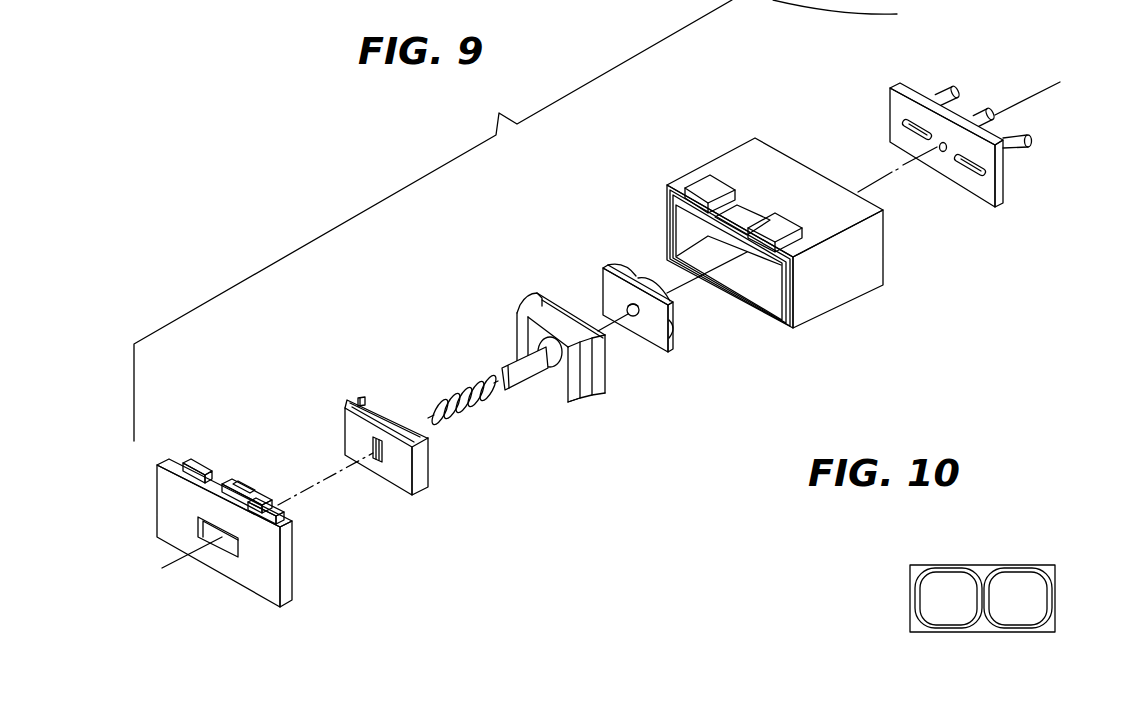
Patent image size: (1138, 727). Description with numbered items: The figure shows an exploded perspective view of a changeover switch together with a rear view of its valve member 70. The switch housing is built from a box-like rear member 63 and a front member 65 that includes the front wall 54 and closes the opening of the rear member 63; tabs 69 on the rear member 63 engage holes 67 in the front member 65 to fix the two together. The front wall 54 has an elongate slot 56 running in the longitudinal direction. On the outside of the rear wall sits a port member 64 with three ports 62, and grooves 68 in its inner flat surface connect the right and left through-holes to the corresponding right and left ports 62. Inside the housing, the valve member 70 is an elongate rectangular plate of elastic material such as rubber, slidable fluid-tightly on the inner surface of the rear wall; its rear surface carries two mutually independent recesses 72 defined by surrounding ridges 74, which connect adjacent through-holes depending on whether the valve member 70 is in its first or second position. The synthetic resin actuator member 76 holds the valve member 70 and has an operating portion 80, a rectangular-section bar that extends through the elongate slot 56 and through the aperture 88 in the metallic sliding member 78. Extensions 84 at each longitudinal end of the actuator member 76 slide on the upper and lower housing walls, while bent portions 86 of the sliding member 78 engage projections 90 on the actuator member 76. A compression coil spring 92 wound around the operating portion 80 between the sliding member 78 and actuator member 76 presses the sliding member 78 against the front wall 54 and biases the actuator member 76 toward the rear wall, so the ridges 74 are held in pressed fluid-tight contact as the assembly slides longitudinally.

In FIG. 9, the front wall 54 is at (262, 583).
In FIG. 9, the elongate slot 56 is at (222, 546).
In FIG. 9, the ports 62 is at (944, 97).
In FIG. 9, the rear member 63 is at (745, 219).
In FIG. 9, the port member 64 is at (964, 130).
In FIG. 9, the front member 65 is at (221, 520).
In FIG. 9, the holes 67 is at (232, 474).
In FIG. 9, the grooves 68 is at (915, 129).
In FIG. 9, the tabs 69 is at (745, 218).
In FIG. 9, the valve member 70 is at (588, 271).
In FIG. 10, the valve member 70 is at (965, 587).
In FIG. 10, the recesses 72 is at (943, 617).
In FIG. 10, the ridges 74 is at (915, 583).
In FIG. 9, the actuator member 76 is at (563, 350).
In FIG. 9, the sliding member 78 is at (392, 434).
In FIG. 9, the operating portion 80 is at (522, 376).
In FIG. 9, the extensions 84 is at (520, 300).
In FIG. 9, the bent portions 86 is at (363, 398).
In FIG. 9, the aperture 88 is at (378, 463).
In FIG. 9, the projections 90 is at (522, 338).
In FIG. 9, the compression coil spring 92 is at (487, 425).